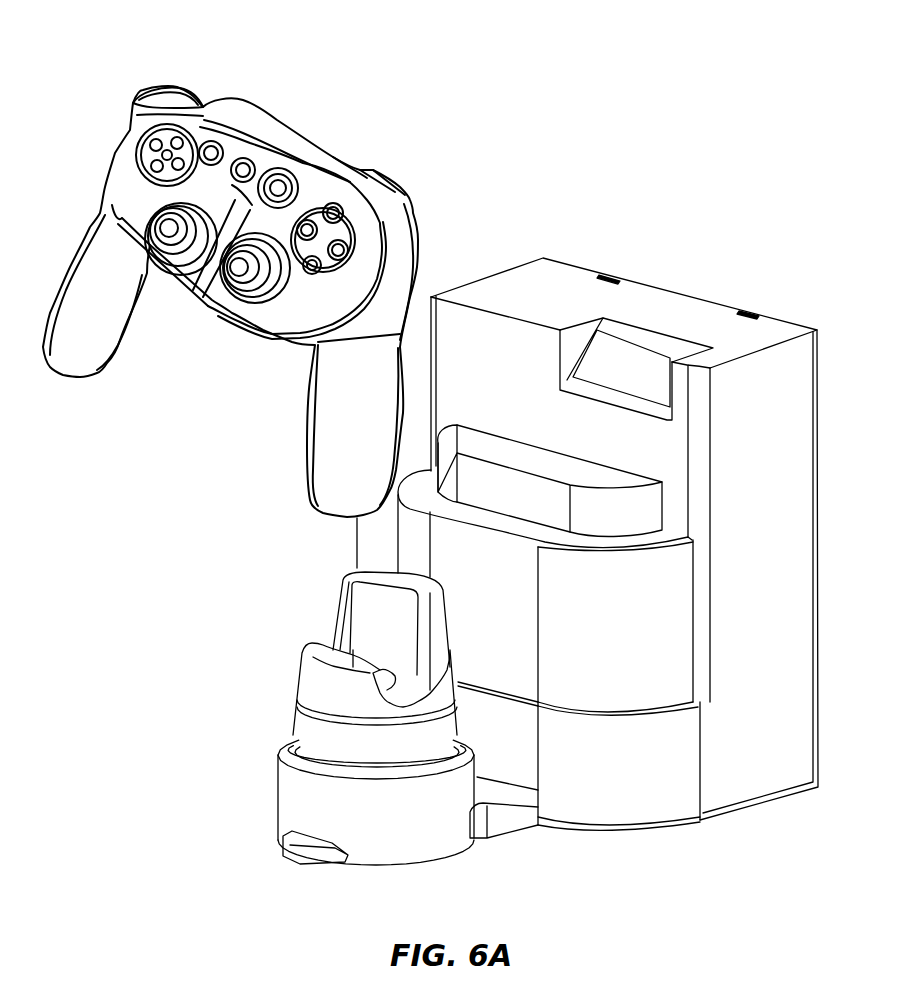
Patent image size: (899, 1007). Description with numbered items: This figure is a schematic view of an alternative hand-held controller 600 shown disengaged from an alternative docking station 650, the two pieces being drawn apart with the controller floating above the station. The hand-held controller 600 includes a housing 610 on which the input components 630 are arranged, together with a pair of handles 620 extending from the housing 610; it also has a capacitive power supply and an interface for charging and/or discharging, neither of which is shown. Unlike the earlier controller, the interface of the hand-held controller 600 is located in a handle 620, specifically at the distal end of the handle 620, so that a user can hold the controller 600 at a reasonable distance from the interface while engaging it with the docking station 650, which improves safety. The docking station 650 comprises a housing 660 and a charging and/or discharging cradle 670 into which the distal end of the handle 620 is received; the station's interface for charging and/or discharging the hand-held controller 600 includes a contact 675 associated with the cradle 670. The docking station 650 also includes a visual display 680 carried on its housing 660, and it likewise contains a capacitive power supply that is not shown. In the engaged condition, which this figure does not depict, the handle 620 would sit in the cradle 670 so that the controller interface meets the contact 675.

The hand-held controller 600 is at (107, 108).
The housing 610 is at (403, 220).
The handles 620 is at (78, 363).
The input components 630 is at (199, 130).
The docking station 650 is at (764, 281).
The housing 660 is at (658, 807).
The charging and/or discharging cradle 670 is at (312, 678).
The contact 675 is at (390, 673).
The visual display 680 is at (647, 360).